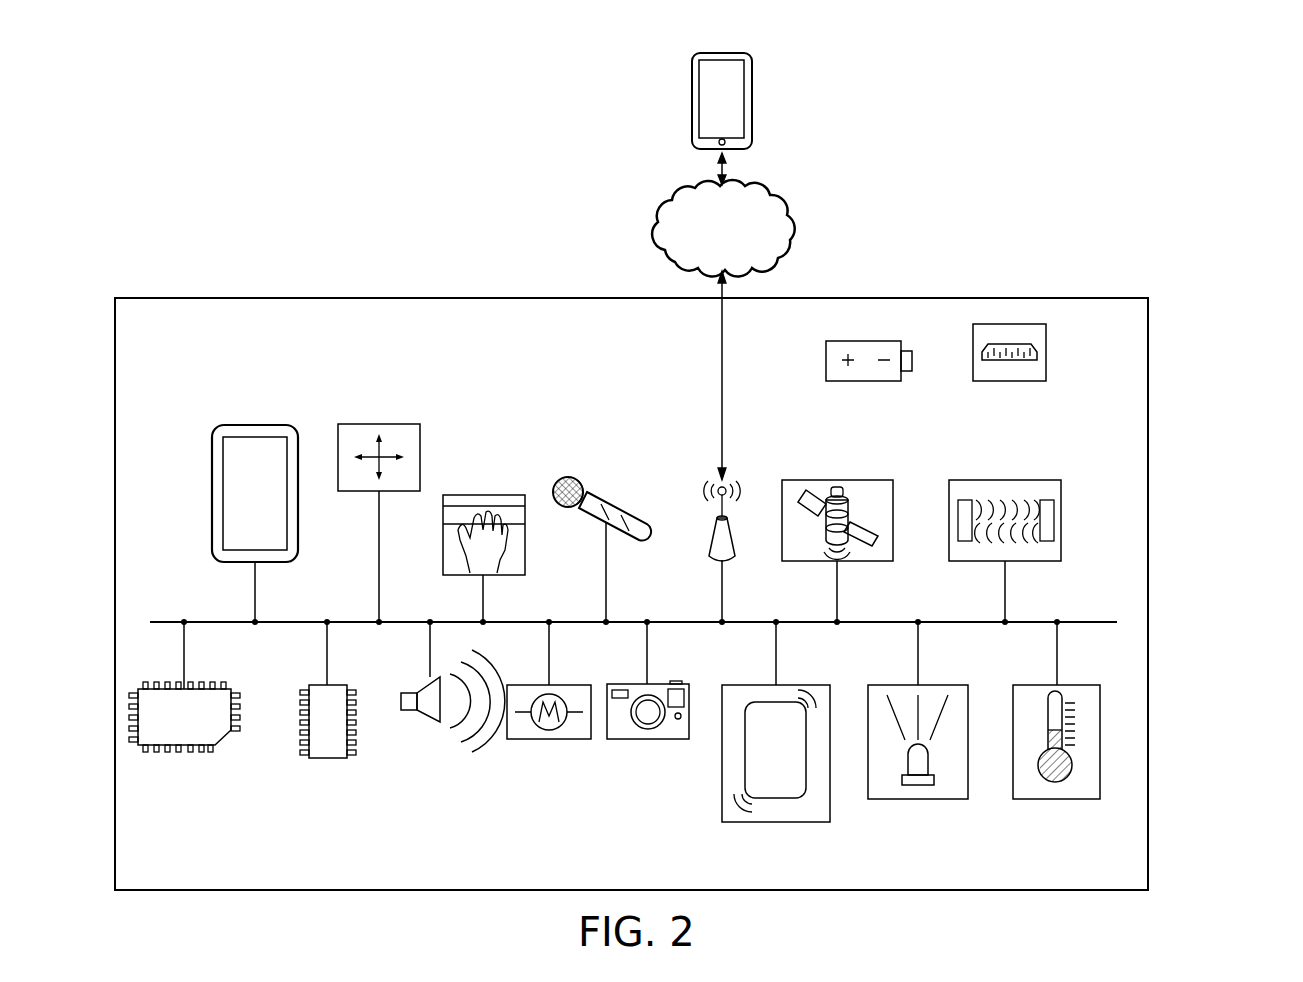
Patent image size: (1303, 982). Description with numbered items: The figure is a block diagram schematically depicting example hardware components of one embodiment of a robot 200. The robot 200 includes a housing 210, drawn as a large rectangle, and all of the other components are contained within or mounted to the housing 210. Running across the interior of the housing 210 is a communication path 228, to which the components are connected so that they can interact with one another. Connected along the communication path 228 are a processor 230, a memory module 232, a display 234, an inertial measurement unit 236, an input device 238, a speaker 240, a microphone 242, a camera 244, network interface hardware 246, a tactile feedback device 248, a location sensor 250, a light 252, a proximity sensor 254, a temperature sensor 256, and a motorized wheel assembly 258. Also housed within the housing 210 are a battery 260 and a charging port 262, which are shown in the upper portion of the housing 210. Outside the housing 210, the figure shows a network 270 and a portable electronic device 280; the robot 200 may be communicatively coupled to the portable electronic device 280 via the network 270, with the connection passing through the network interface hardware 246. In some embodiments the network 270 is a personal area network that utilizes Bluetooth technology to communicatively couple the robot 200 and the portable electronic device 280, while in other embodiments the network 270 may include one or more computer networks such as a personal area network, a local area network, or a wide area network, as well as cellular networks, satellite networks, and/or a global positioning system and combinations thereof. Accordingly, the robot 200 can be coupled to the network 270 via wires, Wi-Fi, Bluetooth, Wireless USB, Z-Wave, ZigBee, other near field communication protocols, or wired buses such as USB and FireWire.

The robot 200 is at (1198, 319).
The housing 210 is at (1148, 480).
The communication path 228 is at (165, 620).
The processor 230 is at (222, 744).
The memory module 232 is at (328, 760).
The display 234 is at (255, 423).
The inertial measurement unit 236 is at (379, 423).
The input device 238 is at (483, 494).
The speaker 240 is at (425, 725).
The microphone 242 is at (600, 498).
The camera 244 is at (648, 740).
The network interface hardware 246 is at (712, 528).
The tactile feedback device 248 is at (776, 823).
The location sensor 250 is at (837, 478).
The light 252 is at (918, 800).
The proximity sensor 254 is at (1005, 478).
The temperature sensor 256 is at (1057, 800).
The motorized wheel assembly 258 is at (549, 740).
The battery 260 is at (826, 362).
The charging port 262 is at (1046, 352).
The network 270 is at (658, 228).
The portable electronic device 280 is at (692, 85).